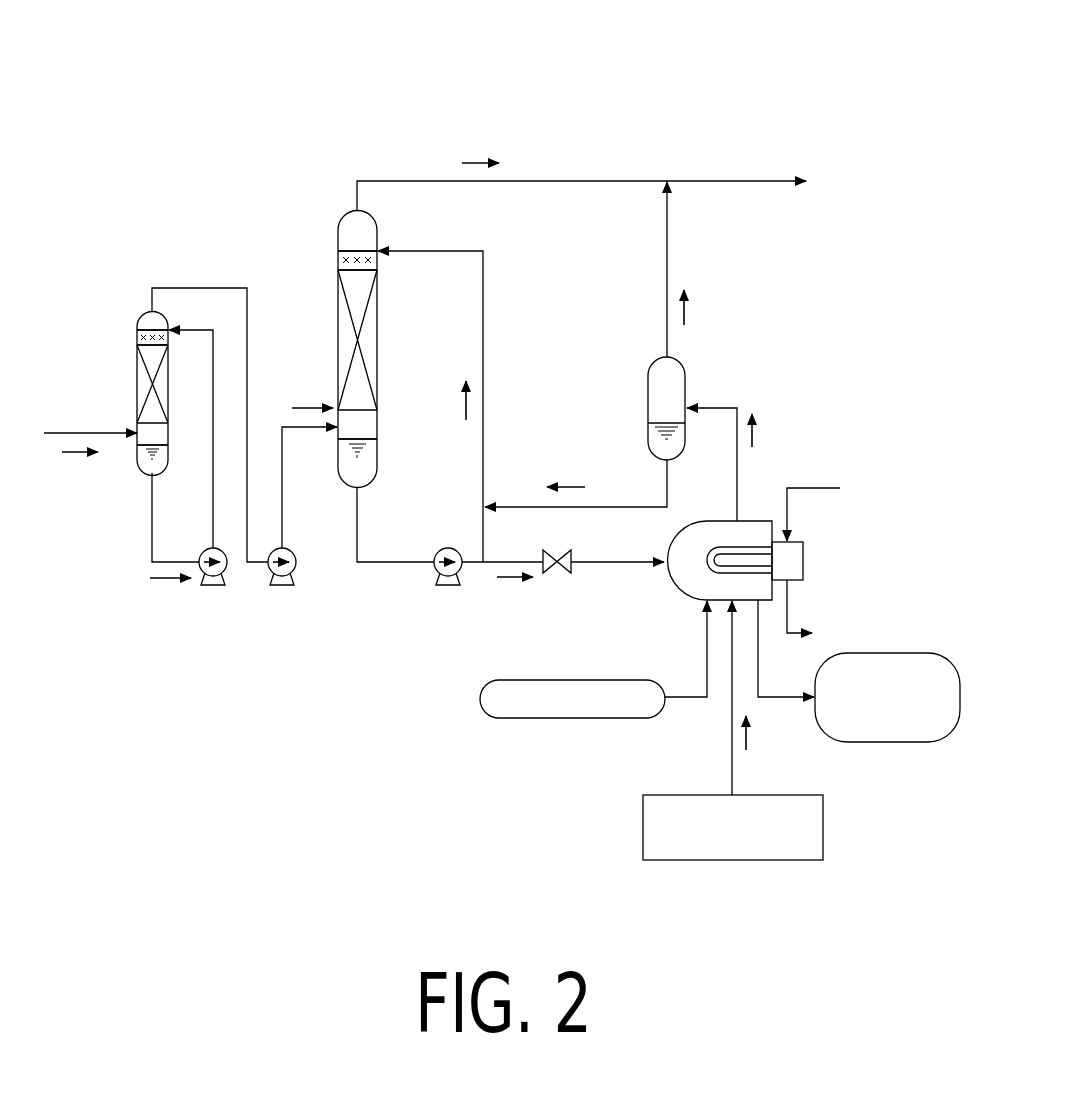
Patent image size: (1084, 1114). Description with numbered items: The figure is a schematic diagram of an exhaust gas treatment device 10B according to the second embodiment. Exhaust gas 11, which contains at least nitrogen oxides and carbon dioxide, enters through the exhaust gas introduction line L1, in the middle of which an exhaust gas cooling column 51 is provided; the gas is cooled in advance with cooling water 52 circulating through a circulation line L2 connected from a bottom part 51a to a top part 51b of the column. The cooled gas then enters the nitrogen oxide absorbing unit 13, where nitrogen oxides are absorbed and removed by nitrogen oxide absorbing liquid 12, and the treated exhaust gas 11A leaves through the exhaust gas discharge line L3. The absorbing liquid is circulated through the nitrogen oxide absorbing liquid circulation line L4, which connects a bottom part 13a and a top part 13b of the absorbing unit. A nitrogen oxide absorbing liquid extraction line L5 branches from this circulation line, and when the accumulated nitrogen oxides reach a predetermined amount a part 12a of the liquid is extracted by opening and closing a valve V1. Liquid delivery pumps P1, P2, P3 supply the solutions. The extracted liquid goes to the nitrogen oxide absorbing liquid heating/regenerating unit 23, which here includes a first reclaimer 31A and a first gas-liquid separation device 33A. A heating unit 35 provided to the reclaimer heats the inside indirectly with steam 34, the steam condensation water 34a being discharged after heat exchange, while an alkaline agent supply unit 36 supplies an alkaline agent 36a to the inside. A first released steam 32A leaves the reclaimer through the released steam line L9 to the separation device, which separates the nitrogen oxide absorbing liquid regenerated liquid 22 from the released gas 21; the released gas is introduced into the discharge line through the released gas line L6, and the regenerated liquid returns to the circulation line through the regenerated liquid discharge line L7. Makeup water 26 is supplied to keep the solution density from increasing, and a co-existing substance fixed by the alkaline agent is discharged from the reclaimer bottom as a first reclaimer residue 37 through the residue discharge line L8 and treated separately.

The exhaust gas treatment device 10B is at (578, 76).
The exhaust gas 11 is at (74, 455).
The exhaust gas 11A is at (478, 160).
The nitrogen oxide absorbing liquid 12 is at (464, 402).
The part of the nitrogen oxide absorbing liquid 12a is at (505, 582).
The nitrogen oxide absorbing unit 13 is at (357, 283).
The bottom part 13a is at (378, 464).
The top part 13b is at (338, 226).
The released gas 21 is at (687, 310).
The nitrogen oxide absorbing liquid regenerated liquid 22 is at (574, 488).
The nitrogen oxide absorbing liquid heating/regenerating unit 23 is at (790, 430).
The makeup water 26 is at (614, 718).
The first reclaimer 31A is at (760, 505).
The first released steam 32A is at (752, 436).
The first gas-liquid separation device 33A is at (695, 379).
The steam 34 is at (841, 488).
The steam condensation water 34a is at (790, 600).
The heating unit 35 is at (803, 562).
The alkaline agent supply unit 36 is at (791, 795).
The alkaline agent 36a is at (748, 740).
The first reclaimer residue 37 is at (905, 742).
The exhaust gas cooling column 51 is at (107, 383).
The bottom part 51a is at (140, 476).
The top part 51b is at (137, 325).
The cooling water 52 is at (166, 584).
The exhaust gas introduction line L1 is at (200, 288).
The circulation line L2 is at (213, 497).
The exhaust gas discharge line L3 is at (615, 181).
The nitrogen oxide absorbing liquid circulation line L4 is at (378, 565).
The nitrogen oxide absorbing liquid extraction line L5 is at (612, 565).
The released gas line L6 is at (668, 338).
The regenerated liquid discharge line L7 is at (506, 506).
The residue discharge line L8 is at (759, 654).
The released steam line L9 is at (737, 485).
The liquid delivery pump P1 is at (213, 586).
The liquid delivery pump P2 is at (282, 586).
The liquid delivery pump P3 is at (448, 586).
The valve V1 is at (557, 575).